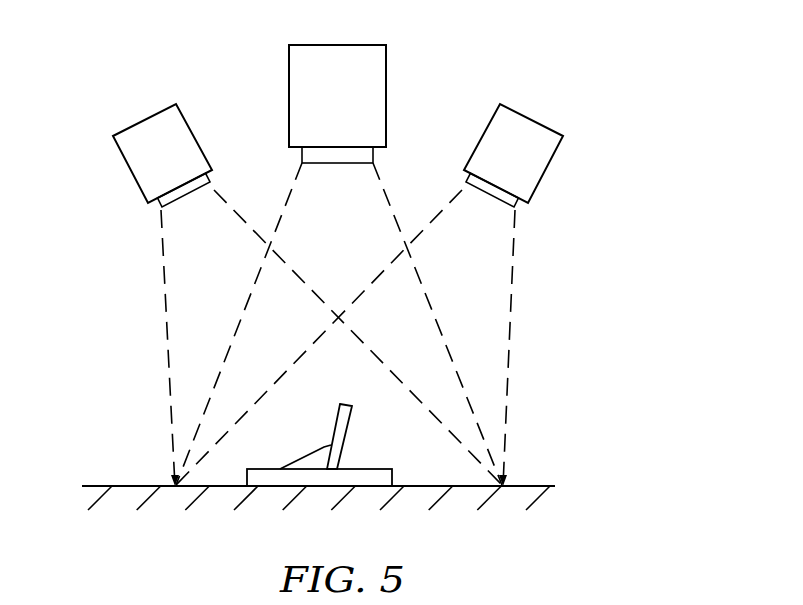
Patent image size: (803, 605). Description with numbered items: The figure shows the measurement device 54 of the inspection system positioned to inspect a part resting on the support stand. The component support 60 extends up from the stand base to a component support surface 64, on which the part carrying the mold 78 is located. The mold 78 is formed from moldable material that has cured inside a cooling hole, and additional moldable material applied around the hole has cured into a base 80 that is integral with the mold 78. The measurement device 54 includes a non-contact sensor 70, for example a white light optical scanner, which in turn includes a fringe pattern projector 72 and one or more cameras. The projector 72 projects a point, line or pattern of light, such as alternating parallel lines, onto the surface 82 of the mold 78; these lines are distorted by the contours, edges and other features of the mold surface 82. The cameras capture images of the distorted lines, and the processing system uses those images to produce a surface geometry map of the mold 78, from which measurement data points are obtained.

The measurement device 54 is at (366, 280).
The non-contact sensor 70 is at (351, 298).
The fringe pattern projector 72 is at (352, 106).
The component support 60 is at (558, 511).
The component support surface 64 is at (102, 486).
The mold 78 is at (346, 437).
The base 80 is at (370, 480).
The surface 82 is at (326, 433).